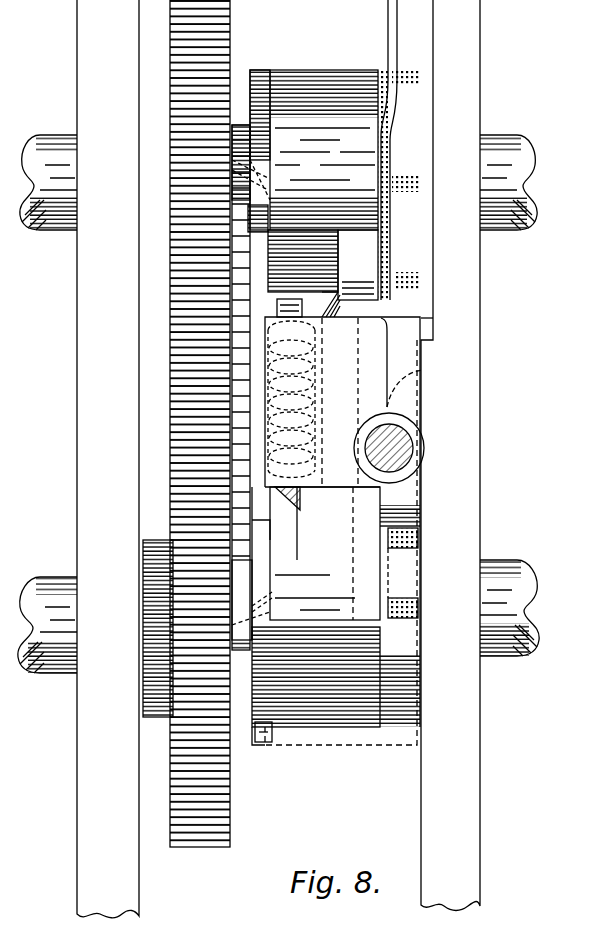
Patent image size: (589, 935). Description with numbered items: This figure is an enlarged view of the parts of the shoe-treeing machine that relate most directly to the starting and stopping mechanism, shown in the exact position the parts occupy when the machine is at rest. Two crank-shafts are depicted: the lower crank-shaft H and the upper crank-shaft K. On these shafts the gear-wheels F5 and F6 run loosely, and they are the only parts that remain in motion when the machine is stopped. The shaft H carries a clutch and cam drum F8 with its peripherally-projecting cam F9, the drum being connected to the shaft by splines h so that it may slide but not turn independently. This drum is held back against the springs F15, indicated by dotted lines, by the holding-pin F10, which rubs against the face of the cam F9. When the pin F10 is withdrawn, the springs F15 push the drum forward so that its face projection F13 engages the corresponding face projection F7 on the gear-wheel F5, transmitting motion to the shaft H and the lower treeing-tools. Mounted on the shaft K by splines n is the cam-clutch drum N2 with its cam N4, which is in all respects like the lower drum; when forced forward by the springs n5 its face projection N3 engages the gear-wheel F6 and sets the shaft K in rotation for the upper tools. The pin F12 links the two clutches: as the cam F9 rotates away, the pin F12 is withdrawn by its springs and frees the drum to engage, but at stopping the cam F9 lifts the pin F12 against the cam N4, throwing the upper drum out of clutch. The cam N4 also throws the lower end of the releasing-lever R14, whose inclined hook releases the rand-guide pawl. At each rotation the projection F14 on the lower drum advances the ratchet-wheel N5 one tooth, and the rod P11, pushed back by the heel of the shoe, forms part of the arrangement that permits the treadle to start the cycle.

The crank-shaft K is at (540, 150).
The crank-shaft H is at (541, 598).
The gear-wheel F6 is at (243, 34).
The gear-wheel F5 is at (233, 797).
The ratchet-wheel N5 is at (260, 292).
The splines n is at (258, 232).
The face projection N3 is at (262, 140).
The cam-clutch drum N2 is at (314, 181).
The cam N4 is at (364, 254).
The releasing-lever R14 is at (383, 110).
The springs n5 is at (500, 268).
The pin F12 is at (330, 300).
The rod P11 is at (392, 450).
The peripherally-projecting cam F9 is at (325, 553).
The holding-pin F10 is at (280, 504).
The clutch and cam drum F8 is at (276, 563).
The splines h is at (242, 680).
The face projection F7 is at (251, 600).
The springs F15 is at (420, 542).
The face projection F13 is at (254, 729).
The projection F14 is at (254, 745).